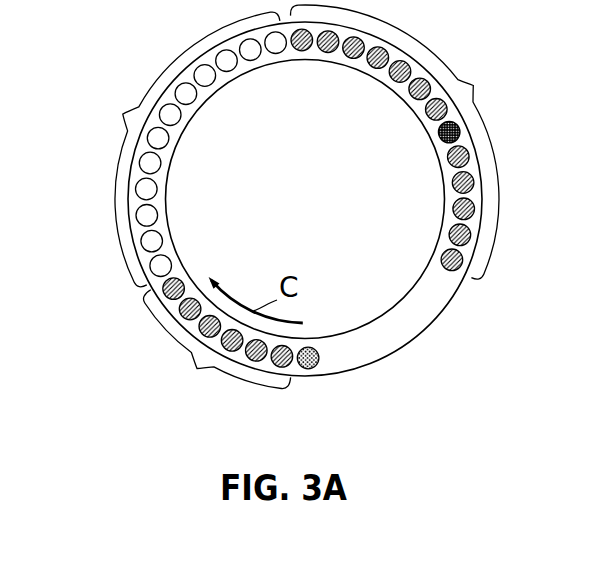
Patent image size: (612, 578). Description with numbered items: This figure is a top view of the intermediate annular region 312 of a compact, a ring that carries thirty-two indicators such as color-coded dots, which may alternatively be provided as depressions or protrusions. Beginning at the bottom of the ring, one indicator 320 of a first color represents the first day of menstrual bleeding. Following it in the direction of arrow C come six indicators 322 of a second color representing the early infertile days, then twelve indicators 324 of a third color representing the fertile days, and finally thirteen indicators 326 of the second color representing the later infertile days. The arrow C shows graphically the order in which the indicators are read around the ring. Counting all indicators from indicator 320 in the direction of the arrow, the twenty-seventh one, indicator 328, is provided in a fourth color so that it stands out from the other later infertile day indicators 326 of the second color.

The intermediate annular region 312 is at (113, 64).
The indicator of a first color 320 is at (313, 367).
The indicators of a second color 322 is at (217, 341).
The indicators of a third color 324 is at (185, 149).
The indicators of the second color 326 is at (397, 142).
The indicator of a fourth color 328 is at (440, 140).